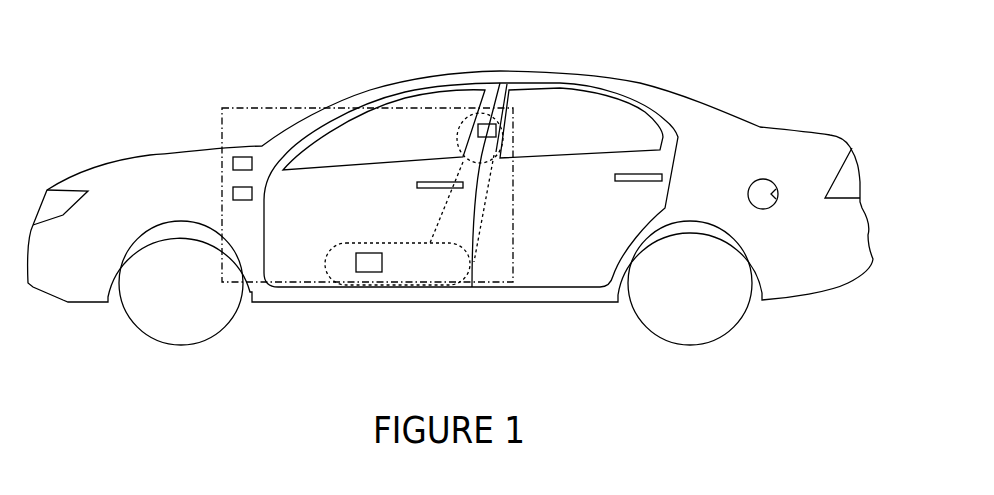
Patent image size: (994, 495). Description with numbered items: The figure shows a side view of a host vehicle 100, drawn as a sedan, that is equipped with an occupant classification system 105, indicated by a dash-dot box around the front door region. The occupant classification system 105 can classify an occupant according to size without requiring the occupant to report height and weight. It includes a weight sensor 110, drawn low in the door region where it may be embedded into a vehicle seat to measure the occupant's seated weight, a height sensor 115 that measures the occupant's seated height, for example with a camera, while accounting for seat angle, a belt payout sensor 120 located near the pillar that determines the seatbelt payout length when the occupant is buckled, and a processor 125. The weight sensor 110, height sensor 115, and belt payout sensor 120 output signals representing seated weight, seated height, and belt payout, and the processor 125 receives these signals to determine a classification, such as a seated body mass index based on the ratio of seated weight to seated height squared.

The host vehicle 100 is at (498, 87).
The occupant classification system 105 is at (263, 109).
The weight sensor 110 is at (372, 272).
The height sensor 115 is at (243, 156).
The belt payout sensor 120 is at (496, 130).
The processor 125 is at (252, 193).